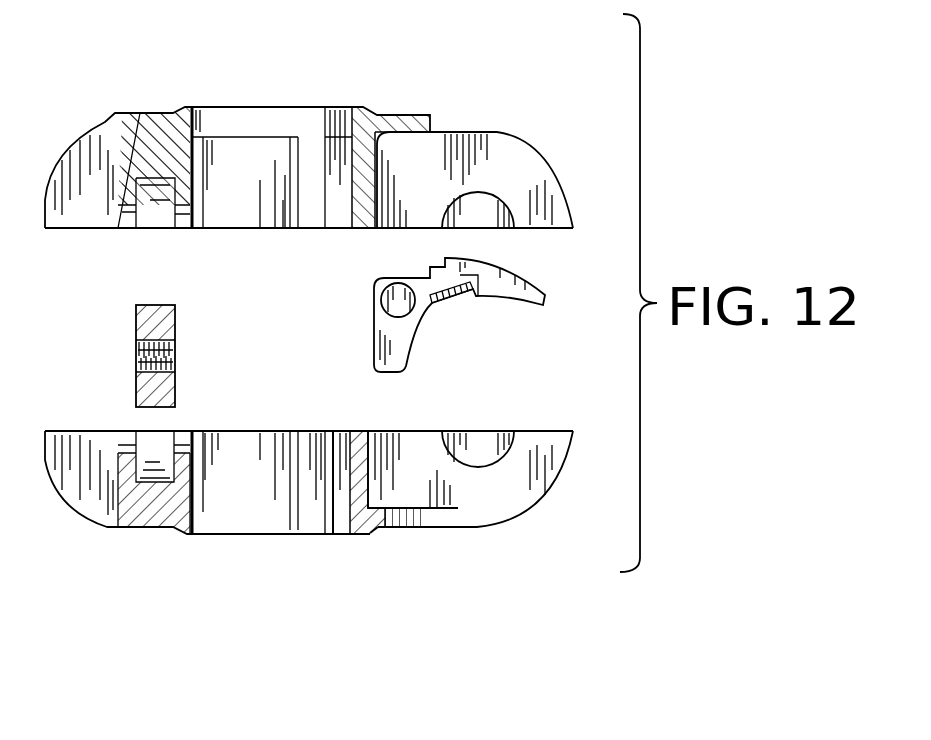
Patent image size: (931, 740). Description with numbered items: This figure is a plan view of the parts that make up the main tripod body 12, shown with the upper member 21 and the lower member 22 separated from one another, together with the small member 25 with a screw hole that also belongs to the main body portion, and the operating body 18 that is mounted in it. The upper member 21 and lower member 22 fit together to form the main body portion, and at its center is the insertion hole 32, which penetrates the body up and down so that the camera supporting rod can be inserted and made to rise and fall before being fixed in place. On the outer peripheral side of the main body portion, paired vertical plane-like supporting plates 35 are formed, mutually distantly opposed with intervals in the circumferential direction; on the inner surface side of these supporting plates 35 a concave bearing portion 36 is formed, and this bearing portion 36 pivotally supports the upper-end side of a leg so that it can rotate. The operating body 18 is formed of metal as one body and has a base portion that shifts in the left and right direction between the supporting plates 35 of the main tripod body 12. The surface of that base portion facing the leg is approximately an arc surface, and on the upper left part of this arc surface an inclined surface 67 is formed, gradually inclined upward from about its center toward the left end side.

The main tripod body 12 is at (363, 97).
The operating body 18 is at (542, 277).
The upper member 21 is at (407, 114).
The lower member 22 is at (369, 533).
The small member 25 is at (136, 328).
The insertion hole 32 is at (228, 138).
The supporting plates 35 is at (463, 132).
The bearing portion 36 is at (502, 204).
The inclined surface 67 is at (444, 300).